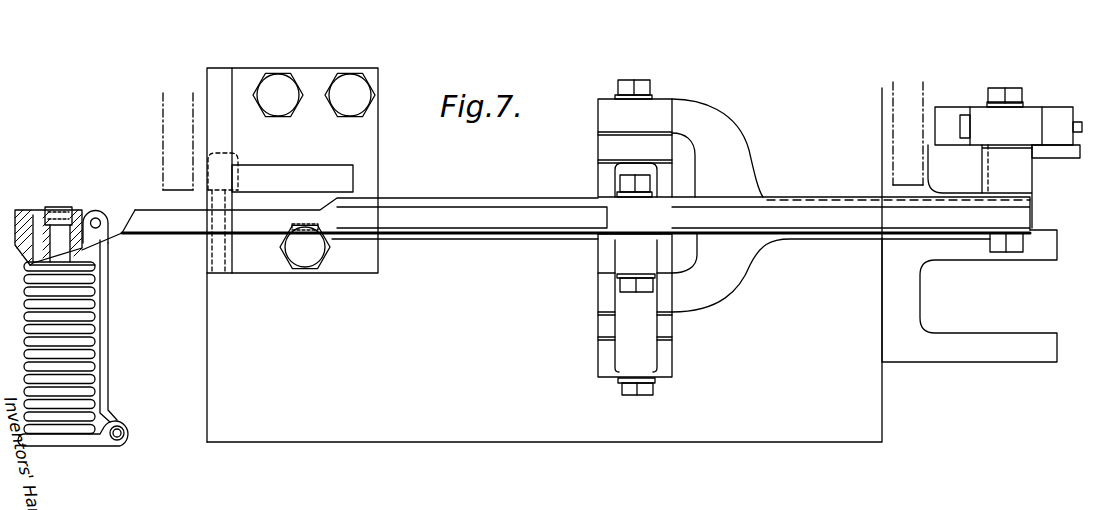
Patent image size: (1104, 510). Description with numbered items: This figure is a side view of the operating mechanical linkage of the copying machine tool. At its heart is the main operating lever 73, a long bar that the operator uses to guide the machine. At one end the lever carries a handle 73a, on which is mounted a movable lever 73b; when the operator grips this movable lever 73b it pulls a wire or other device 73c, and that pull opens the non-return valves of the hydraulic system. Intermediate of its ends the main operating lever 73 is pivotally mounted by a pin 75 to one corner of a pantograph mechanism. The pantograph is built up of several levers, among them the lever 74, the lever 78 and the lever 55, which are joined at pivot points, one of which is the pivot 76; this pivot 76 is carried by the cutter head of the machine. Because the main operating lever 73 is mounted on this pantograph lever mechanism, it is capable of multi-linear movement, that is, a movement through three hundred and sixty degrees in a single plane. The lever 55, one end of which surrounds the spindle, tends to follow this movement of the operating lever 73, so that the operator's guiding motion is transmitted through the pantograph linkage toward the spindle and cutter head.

The lever 55 is at (1018, 122).
The main operating lever 73 is at (477, 220).
The handle 73a is at (90, 337).
The movable lever 73b is at (112, 312).
The wire or other device 73c is at (119, 220).
The lever 74 is at (604, 147).
The pin 75 is at (645, 217).
The pivot point 76 is at (640, 80).
The lever 78 is at (815, 239).